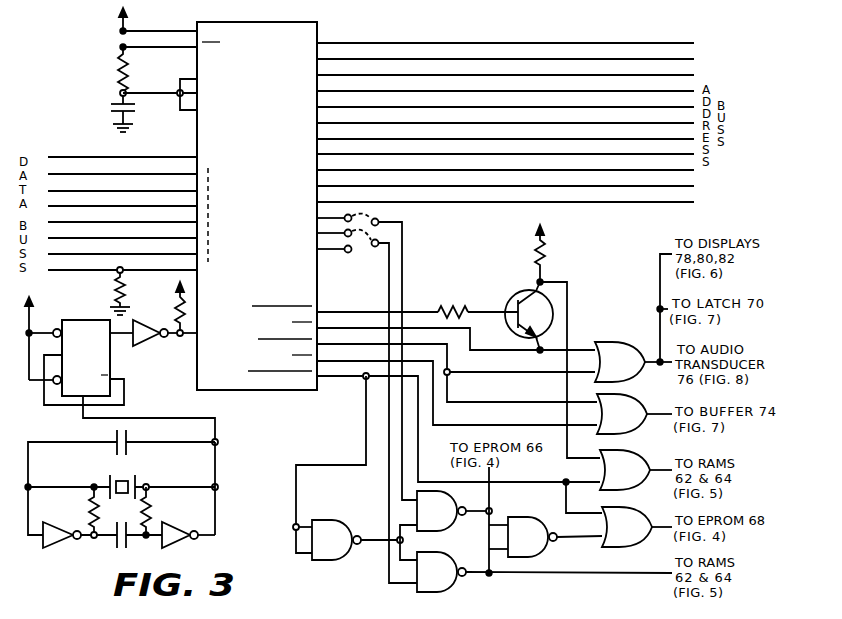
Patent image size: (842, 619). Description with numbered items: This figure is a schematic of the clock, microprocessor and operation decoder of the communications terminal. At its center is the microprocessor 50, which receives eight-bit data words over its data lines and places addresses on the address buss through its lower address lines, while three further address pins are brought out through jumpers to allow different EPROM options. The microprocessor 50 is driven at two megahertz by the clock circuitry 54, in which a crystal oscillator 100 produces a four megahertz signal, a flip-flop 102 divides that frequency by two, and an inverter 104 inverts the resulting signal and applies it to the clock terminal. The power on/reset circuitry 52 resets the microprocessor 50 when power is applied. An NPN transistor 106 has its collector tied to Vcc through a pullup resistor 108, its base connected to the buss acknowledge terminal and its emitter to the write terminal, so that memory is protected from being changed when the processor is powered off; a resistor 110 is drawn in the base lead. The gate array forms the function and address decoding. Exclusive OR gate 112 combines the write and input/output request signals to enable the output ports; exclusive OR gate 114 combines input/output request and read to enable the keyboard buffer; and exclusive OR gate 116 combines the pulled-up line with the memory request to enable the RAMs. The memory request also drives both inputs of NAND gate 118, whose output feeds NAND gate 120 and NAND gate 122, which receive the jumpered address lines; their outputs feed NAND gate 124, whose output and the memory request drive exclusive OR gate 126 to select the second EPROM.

The microprocessor 50 is at (256, 223).
The power on/reset circuitry 52 is at (105, 82).
The clock circuitry 54 is at (234, 424).
The crystal oscillator 100 is at (140, 473).
The flip-flop 102 is at (78, 328).
The inverter 104 is at (150, 340).
The NPN transistor 106 is at (512, 300).
The pullup resistor 108 is at (553, 266).
The resistor 110 is at (448, 310).
The exclusive OR gate 112 is at (617, 352).
The exclusive OR gate 114 is at (632, 402).
The exclusive OR gate 116 is at (634, 466).
The NAND gate 118 is at (332, 535).
The NAND gate 120 is at (442, 513).
The NAND gate 122 is at (452, 572).
The NAND gate 124 is at (530, 528).
The exclusive OR gate 126 is at (634, 522).